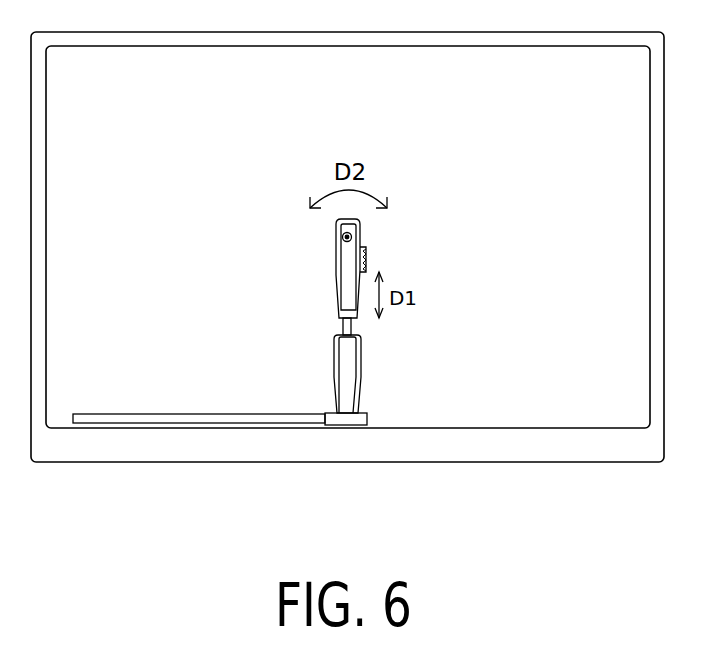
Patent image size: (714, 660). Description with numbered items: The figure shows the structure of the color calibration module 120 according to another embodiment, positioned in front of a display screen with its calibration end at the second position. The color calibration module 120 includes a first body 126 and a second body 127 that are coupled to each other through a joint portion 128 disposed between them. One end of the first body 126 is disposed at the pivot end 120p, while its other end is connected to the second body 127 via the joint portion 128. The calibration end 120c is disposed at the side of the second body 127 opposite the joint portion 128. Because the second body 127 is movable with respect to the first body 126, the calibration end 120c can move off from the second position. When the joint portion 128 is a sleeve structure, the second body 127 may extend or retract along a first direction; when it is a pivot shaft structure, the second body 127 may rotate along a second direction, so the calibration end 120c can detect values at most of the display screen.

The color calibration module 120 is at (277, 385).
The pivot end 120p is at (337, 412).
The calibration end 120c is at (352, 237).
The first body 126 is at (350, 362).
The second body 127 is at (345, 275).
The joint portion 128 is at (352, 327).